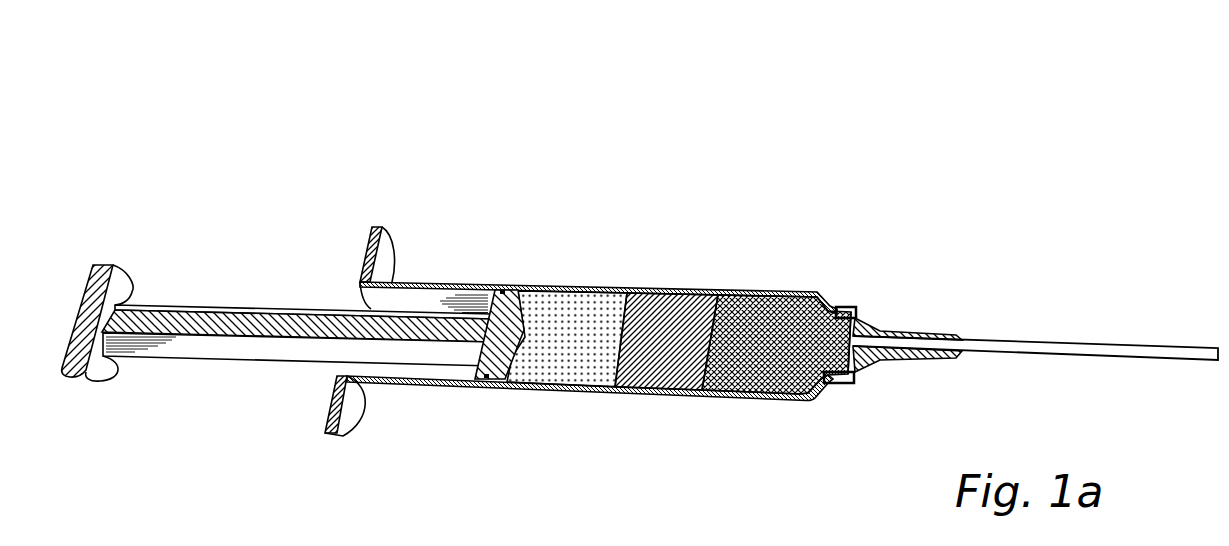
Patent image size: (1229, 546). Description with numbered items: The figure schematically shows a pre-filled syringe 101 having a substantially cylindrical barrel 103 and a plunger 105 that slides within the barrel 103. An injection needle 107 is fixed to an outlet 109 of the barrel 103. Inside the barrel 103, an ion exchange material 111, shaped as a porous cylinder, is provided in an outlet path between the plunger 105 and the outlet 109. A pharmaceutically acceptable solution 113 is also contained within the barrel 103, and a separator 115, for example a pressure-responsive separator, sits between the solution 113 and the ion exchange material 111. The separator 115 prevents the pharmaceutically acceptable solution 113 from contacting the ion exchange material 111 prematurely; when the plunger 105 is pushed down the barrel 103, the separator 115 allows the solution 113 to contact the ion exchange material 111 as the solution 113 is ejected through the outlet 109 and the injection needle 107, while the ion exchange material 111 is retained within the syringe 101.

The pre-filled syringe 101 is at (672, 169).
The barrel 103 is at (457, 280).
The plunger 105 is at (290, 311).
The injection needle 107 is at (983, 340).
The outlet 109 is at (862, 316).
The ion exchange material 111 is at (757, 366).
The pharmaceutically acceptable solution 113 is at (575, 357).
The separator 115 is at (665, 363).